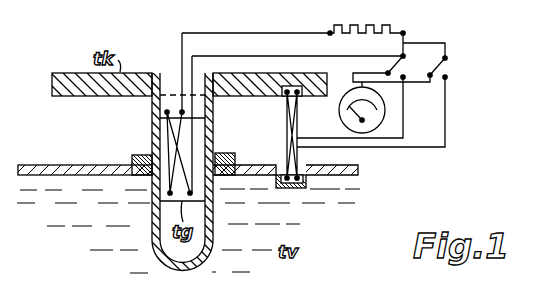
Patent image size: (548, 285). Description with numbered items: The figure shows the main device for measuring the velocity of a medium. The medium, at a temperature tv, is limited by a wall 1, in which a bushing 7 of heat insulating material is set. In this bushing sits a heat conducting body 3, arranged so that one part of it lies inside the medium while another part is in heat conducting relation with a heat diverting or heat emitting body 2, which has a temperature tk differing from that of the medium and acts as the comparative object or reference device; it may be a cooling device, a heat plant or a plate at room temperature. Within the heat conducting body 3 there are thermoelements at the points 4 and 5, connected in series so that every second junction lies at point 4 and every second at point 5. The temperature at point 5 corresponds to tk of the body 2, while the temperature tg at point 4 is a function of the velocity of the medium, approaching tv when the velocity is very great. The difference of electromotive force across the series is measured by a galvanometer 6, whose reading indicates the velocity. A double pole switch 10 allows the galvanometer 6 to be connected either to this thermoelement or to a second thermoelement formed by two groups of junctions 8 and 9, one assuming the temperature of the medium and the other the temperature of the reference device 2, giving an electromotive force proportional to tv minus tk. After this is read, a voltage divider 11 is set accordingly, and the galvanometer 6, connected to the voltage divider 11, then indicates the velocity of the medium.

The wall 1 is at (62, 172).
The heat diverting or heat emitting body 2 is at (70, 97).
The heat conducting body 3 is at (213, 130).
The thermoelement point 4 is at (200, 194).
The thermoelement point 5 is at (165, 113).
The galvanometer 6 is at (380, 121).
The bushing 7 is at (233, 155).
The group of junctions 8 is at (284, 176).
The group of junctions 9 is at (282, 92).
The double pole switch 10 is at (319, 90).
The voltage divider 11 is at (293, 39).